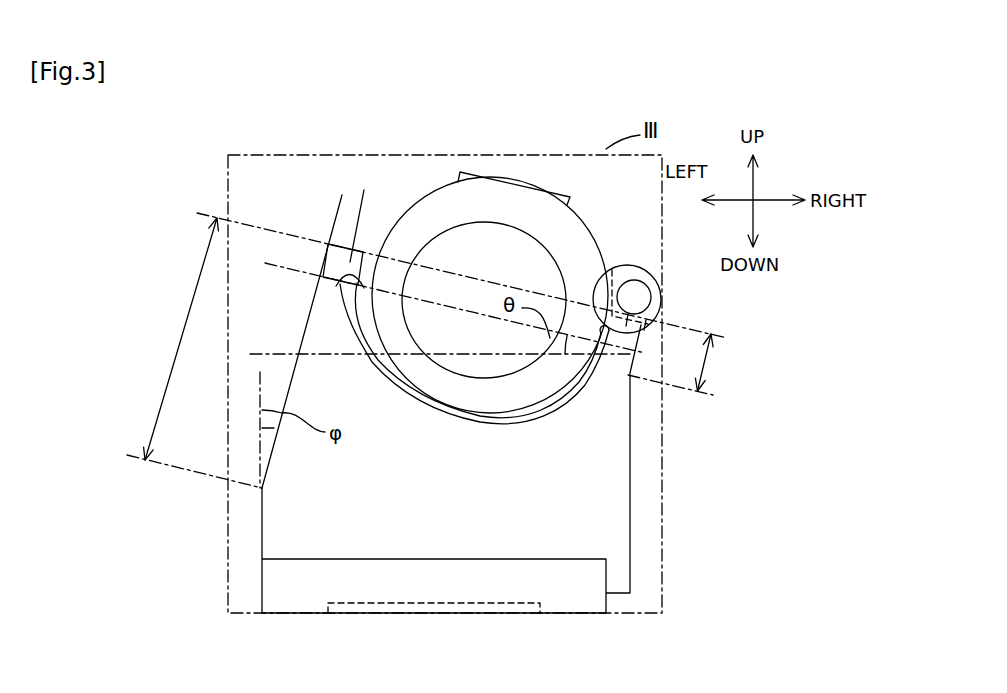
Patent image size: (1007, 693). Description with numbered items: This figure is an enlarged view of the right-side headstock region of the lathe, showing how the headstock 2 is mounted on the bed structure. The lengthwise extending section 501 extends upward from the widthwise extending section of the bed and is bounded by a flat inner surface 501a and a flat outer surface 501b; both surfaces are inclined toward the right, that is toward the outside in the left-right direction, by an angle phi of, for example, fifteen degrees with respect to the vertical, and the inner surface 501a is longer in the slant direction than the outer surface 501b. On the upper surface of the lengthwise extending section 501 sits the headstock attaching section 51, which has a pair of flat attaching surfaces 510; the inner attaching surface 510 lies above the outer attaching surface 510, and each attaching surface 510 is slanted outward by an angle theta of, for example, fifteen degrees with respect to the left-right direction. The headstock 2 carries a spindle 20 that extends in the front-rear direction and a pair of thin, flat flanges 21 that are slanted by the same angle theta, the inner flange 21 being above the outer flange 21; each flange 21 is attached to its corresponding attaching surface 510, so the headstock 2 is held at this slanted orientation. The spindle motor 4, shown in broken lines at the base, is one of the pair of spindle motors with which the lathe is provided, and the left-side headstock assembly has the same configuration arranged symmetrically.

The headstock 2 is at (482, 200).
The spindle 20 is at (522, 253).
The flange 21 is at (364, 190).
The spindle motor 4 is at (430, 603).
The headstock attaching section 51 is at (342, 195).
The attaching surface 510 is at (379, 350).
The lengthwise extending section 501 is at (277, 535).
The inner surface 501a is at (178, 340).
The outer surface 501b is at (707, 365).